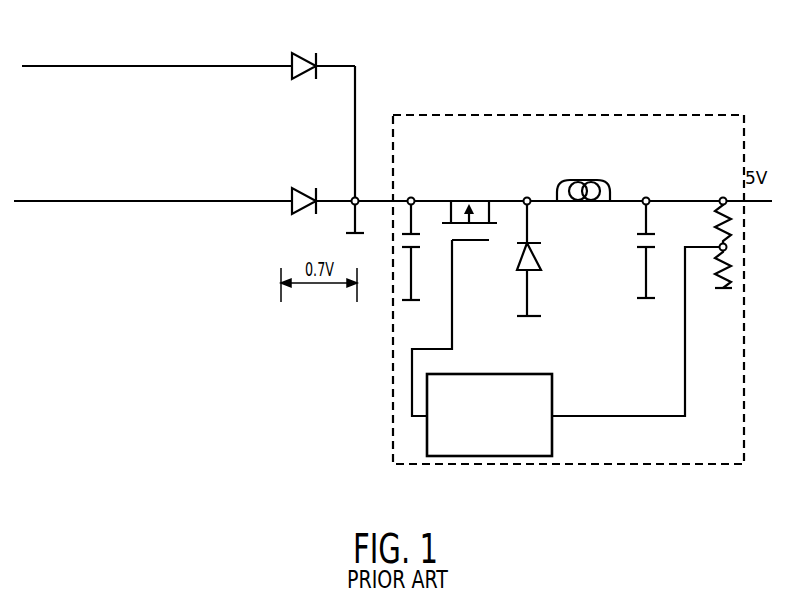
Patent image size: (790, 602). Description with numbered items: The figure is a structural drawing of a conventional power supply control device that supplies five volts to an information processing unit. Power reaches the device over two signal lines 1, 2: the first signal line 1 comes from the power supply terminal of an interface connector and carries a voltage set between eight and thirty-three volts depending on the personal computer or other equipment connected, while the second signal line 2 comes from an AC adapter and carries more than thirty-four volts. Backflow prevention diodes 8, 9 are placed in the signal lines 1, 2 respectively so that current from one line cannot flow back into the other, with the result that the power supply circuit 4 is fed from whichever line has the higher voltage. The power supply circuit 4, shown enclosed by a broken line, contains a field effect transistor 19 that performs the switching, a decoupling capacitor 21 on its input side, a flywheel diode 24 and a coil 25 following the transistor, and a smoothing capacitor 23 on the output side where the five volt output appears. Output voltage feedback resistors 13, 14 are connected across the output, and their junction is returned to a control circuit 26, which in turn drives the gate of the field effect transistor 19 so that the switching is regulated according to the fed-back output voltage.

The signal line 1 is at (28, 66).
The signal line 2 is at (22, 201).
The backflow prevention diode 8 is at (300, 78).
The backflow prevention diode 9 is at (293, 207).
The power supply circuit 4 is at (620, 466).
The field effect transistor 19 is at (480, 195).
The decoupling capacitor 21 is at (422, 240).
The flywheel diode 24 is at (521, 266).
The coil 25 is at (600, 181).
The smoothing capacitor 23 is at (633, 237).
The output voltage feedback resistor 13 is at (715, 232).
The output voltage feedback resistor 14 is at (716, 282).
The control circuit 26 is at (552, 394).